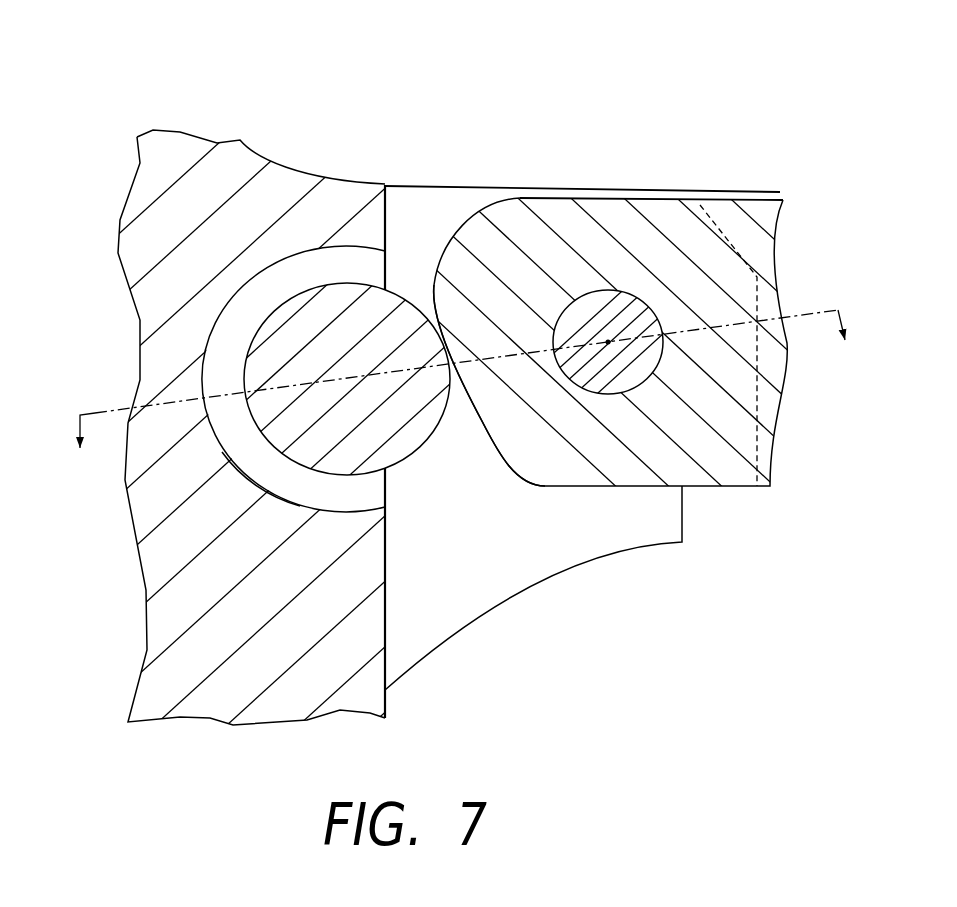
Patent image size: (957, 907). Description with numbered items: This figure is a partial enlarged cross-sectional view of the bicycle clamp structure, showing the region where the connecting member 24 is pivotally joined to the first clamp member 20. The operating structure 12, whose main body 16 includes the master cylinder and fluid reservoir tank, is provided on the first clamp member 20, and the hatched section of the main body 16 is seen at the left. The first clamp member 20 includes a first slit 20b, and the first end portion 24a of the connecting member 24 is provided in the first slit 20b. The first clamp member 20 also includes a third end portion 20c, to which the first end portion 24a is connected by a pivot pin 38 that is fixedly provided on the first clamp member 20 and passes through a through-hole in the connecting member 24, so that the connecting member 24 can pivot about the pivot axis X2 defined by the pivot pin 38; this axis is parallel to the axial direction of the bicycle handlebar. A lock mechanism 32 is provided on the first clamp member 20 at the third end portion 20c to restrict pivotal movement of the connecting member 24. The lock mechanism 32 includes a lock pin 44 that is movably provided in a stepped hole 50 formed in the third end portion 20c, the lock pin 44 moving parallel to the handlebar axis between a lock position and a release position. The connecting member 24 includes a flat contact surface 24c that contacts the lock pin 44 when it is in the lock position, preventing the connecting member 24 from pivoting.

The operating structure 12 is at (122, 90).
The main body 16 is at (149, 117).
The first clamp member 20 is at (430, 164).
The first slit 20b is at (393, 229).
The third end portion 20c is at (473, 200).
The connecting member 24 is at (747, 190).
The first end portion 24a is at (589, 216).
The contact surface 24c is at (480, 413).
The lock mechanism 32 is at (305, 240).
The pivot pin 38 is at (625, 394).
The lock pin 44 is at (302, 467).
The stepped hole 50 is at (250, 456).
The pivot axis X2 is at (608, 344).